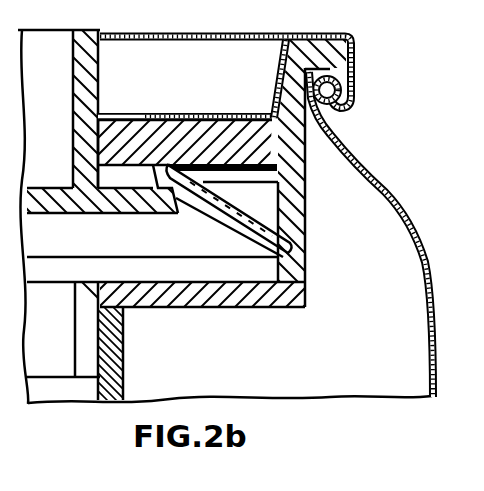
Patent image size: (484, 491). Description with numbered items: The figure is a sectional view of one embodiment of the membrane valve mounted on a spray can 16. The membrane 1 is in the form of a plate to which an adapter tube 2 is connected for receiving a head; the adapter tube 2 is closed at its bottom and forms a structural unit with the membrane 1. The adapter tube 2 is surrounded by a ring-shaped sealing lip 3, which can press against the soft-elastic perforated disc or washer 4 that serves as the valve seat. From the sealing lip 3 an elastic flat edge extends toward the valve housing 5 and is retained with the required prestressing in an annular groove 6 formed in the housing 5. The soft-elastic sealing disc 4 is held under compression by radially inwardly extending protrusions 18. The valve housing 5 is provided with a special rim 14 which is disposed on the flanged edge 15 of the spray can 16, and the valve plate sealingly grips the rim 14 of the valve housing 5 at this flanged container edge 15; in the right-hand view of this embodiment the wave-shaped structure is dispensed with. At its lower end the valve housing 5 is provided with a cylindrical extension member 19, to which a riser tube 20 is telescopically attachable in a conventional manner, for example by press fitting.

The membrane 1 is at (209, 160).
The adapter tube 2 is at (85, 78).
The sealing lip 3 is at (181, 160).
The soft-elastic perforated disc 4 is at (118, 127).
The valve housing 5 is at (280, 297).
The annular groove 6 is at (284, 249).
The rim 14 is at (277, 57).
The flanged edge 15 is at (330, 90).
The spray can 16 is at (426, 395).
The protrusions 18 is at (233, 160).
The cylindrical extension member 19 is at (92, 331).
The riser tube 20 is at (113, 365).